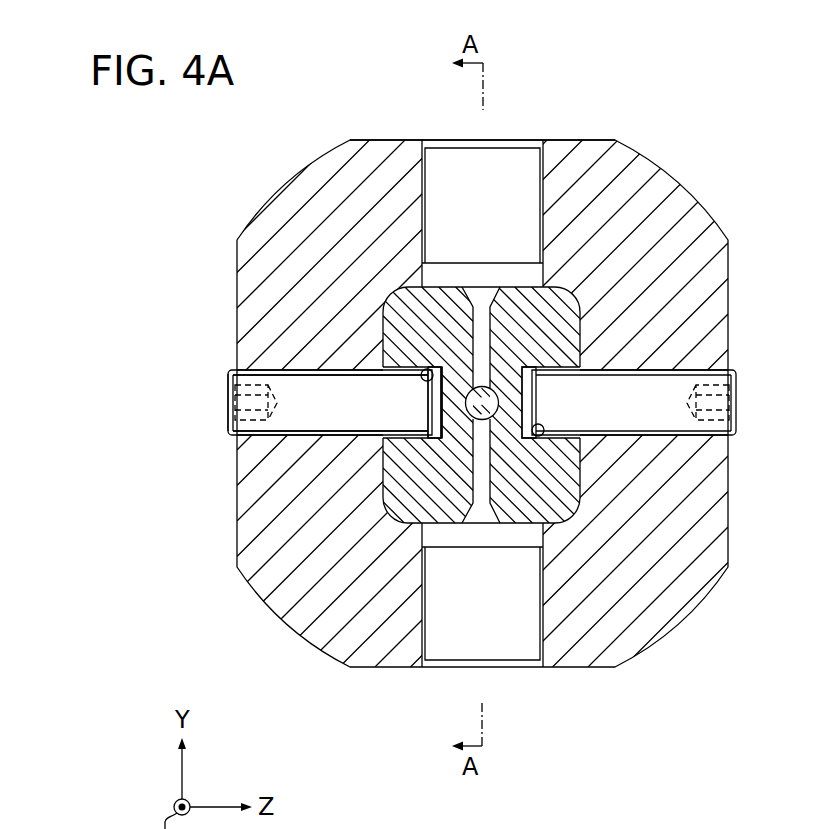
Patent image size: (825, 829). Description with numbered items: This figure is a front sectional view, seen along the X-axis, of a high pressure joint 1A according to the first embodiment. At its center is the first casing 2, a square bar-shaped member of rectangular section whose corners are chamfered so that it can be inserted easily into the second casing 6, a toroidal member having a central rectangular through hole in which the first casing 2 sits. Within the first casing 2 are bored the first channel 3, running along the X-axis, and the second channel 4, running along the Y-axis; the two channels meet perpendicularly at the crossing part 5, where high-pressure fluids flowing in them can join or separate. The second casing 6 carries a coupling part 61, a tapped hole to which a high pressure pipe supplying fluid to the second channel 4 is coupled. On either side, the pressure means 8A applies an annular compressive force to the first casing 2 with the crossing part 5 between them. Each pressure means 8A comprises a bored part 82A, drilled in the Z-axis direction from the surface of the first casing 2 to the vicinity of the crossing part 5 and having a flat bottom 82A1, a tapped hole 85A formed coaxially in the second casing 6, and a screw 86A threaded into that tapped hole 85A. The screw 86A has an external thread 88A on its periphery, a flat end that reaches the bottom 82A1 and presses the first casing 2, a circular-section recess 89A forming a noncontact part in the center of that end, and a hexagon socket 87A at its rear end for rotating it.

The high pressure joint 1A is at (654, 73).
The first casing 2 is at (553, 500).
The first channel 3 is at (482, 403).
The second channel 4 is at (480, 327).
The crossing part 5 is at (468, 452).
The second casing 6 is at (727, 290).
The coupling part 61 is at (441, 148).
The pressure means 8A is at (318, 452).
The bored part 82A is at (428, 369).
The bottom 82A1 is at (375, 370).
The tapped hole 85A is at (285, 371).
The screw 86A is at (303, 420).
The hexagon socket 87A is at (228, 403).
The external thread 88A is at (425, 385).
The recess 89A is at (460, 430).